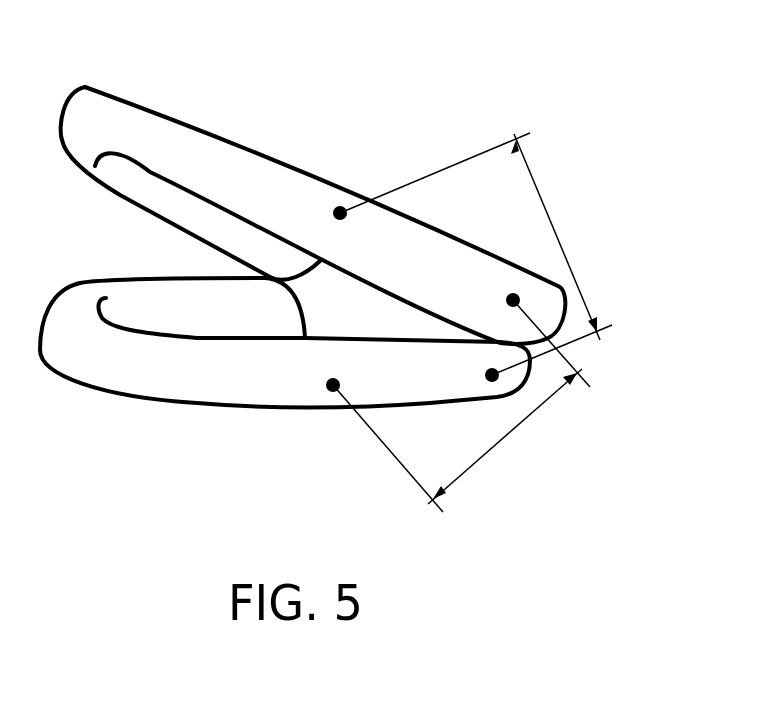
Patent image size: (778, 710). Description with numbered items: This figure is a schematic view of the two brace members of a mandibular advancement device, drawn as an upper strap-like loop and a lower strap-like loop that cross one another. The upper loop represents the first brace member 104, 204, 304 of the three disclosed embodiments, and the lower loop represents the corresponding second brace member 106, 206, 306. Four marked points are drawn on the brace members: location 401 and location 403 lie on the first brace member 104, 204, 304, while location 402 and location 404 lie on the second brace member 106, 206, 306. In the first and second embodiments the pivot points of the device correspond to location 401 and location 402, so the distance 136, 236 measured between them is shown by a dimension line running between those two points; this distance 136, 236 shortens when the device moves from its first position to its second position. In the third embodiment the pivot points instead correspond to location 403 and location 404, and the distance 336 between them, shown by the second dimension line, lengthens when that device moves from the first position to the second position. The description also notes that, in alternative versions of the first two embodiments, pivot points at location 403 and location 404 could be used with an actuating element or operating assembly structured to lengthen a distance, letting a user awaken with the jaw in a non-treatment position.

The first brace member 104 is at (137, 131).
The first brace member 204 is at (313, 215).
The first brace member 304 is at (313, 215).
The second brace member 106 is at (133, 368).
The second brace member 206 is at (285, 343).
The second brace member 306 is at (285, 343).
The distance 136 is at (510, 432).
The distance 236 is at (461, 406).
The distance 336 is at (558, 237).
The location 401 is at (513, 300).
The location 402 is at (333, 385).
The location 403 is at (340, 213).
The location 404 is at (492, 375).